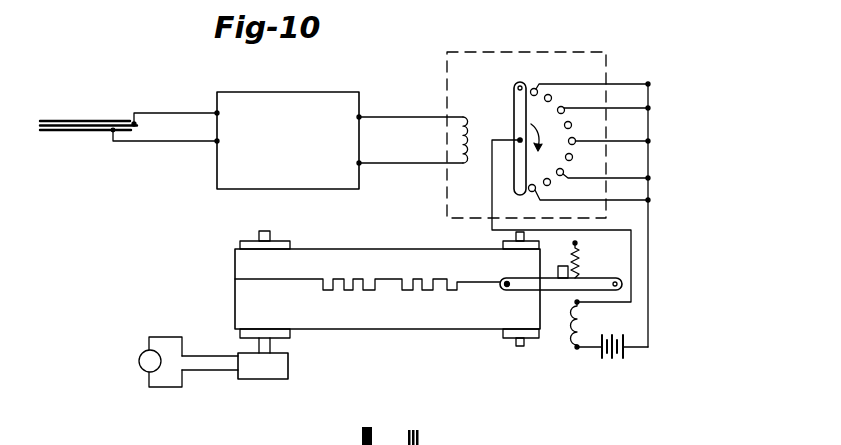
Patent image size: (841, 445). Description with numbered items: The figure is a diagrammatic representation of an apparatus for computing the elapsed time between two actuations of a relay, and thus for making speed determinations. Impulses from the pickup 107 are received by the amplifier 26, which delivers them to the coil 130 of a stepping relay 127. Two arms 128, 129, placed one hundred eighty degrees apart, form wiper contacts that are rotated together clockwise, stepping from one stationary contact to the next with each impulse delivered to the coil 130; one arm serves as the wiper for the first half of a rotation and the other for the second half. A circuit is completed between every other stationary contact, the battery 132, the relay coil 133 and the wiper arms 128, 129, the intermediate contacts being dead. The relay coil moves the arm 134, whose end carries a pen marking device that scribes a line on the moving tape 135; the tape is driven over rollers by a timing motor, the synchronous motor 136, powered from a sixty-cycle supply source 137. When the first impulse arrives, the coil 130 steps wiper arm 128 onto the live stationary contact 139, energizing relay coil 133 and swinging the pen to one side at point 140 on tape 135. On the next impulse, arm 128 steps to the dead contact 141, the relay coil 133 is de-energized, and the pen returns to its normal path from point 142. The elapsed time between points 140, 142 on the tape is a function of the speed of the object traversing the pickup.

The tape / record carrier 107 is at (65, 121).
The amplifier 26 is at (303, 86).
The coil 130 is at (460, 127).
The stepping relay 127 is at (525, 44).
The arm 128 is at (514, 105).
The arm 129 is at (522, 163).
The stationary contact 139 is at (535, 88).
The dead contact 141 is at (552, 97).
The tape 135 is at (400, 329).
The point 140 is at (437, 292).
The point 142 is at (455, 291).
The arm 134 is at (589, 265).
The relay coil 133 is at (583, 322).
The battery 132 is at (618, 358).
The 60-cycle supply source 137 is at (139, 361).
The synchronous motor 136 is at (290, 372).